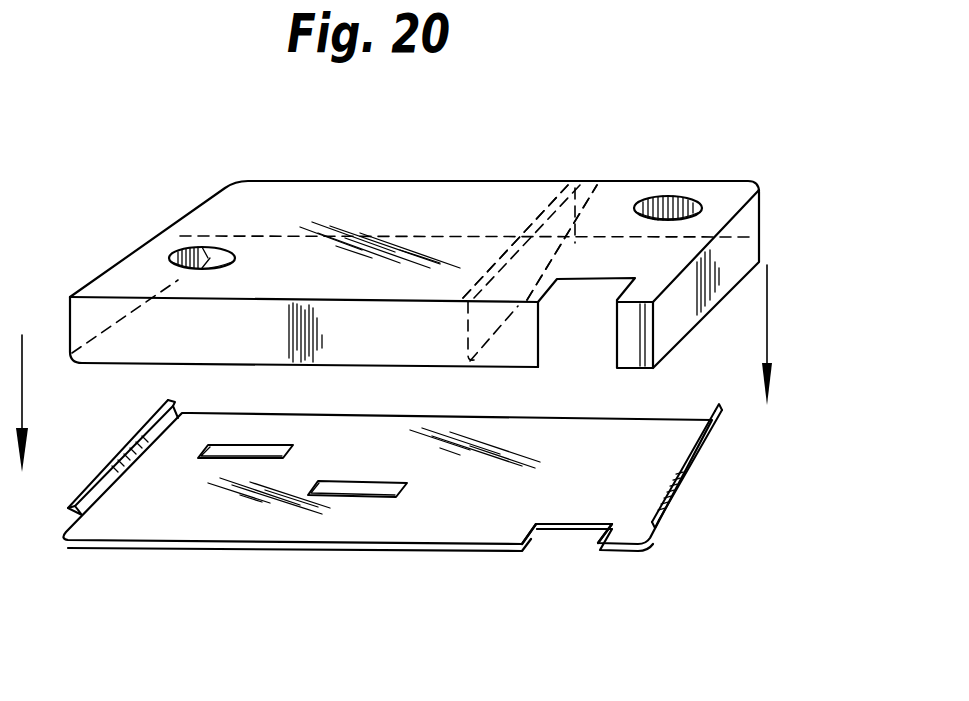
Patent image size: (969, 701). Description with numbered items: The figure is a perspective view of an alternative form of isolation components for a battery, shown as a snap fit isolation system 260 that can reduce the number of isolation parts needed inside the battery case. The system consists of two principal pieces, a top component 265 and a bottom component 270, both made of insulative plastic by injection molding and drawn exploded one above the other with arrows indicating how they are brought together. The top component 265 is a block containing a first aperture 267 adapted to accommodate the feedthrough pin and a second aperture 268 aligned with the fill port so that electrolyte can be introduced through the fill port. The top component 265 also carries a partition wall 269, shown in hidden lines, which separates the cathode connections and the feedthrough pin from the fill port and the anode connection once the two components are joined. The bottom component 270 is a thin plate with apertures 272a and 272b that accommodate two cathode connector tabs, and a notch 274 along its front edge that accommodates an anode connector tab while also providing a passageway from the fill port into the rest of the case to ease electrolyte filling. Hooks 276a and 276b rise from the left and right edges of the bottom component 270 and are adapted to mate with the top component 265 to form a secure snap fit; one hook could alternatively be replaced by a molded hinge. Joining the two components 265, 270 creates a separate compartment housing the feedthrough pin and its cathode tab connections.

The snap fit isolation system 260 is at (486, 154).
The top component 265 is at (760, 221).
The first aperture 267 is at (178, 257).
The second aperture 268 is at (688, 198).
The partition wall 269 is at (591, 186).
The bottom component 270 is at (676, 507).
The aperture 272a is at (217, 461).
The aperture 272b is at (330, 499).
The notch 274 is at (570, 527).
The hook 276a is at (95, 482).
The hook 276b is at (716, 438).